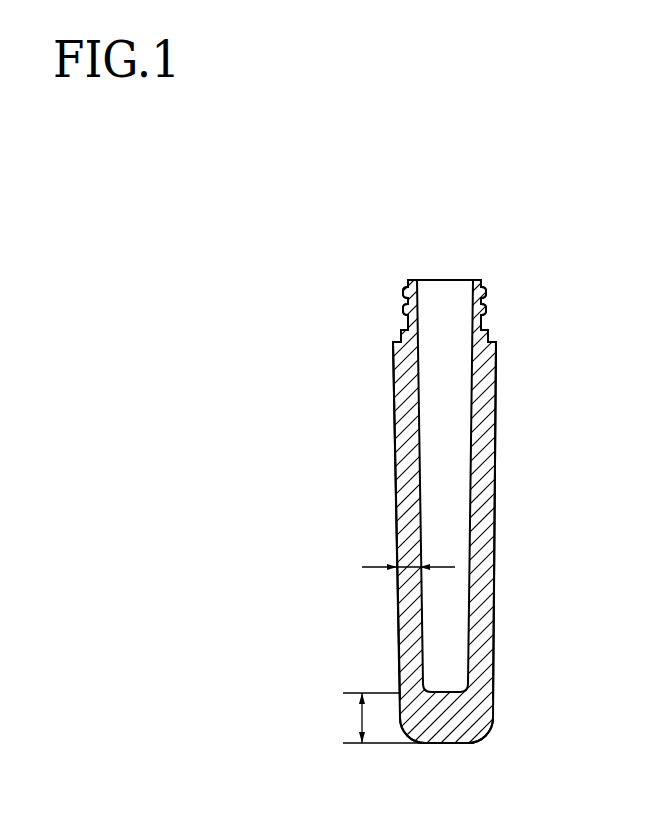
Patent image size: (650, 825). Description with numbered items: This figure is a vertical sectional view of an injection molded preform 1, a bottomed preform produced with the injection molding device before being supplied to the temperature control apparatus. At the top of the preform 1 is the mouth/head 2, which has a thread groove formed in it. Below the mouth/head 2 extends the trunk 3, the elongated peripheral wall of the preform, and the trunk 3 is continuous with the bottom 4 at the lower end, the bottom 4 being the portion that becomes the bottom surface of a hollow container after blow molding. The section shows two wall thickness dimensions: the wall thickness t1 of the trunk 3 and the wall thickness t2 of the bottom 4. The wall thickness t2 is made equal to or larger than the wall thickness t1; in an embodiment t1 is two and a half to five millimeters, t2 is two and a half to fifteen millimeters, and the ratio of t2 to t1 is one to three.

The preform 1 is at (356, 312).
The mouth/head 2 is at (480, 280).
The trunk 3 is at (492, 512).
The bottom 4 is at (480, 720).
The wall thickness of the trunk t1 is at (400, 562).
The wall thickness of the bottom t2 is at (362, 720).